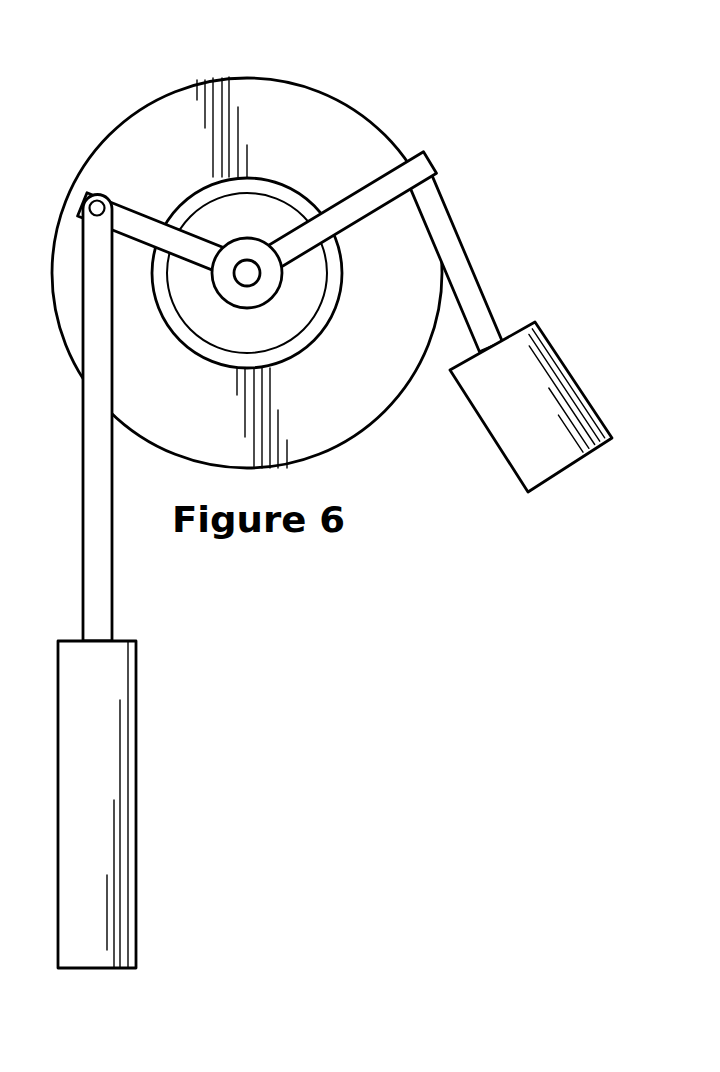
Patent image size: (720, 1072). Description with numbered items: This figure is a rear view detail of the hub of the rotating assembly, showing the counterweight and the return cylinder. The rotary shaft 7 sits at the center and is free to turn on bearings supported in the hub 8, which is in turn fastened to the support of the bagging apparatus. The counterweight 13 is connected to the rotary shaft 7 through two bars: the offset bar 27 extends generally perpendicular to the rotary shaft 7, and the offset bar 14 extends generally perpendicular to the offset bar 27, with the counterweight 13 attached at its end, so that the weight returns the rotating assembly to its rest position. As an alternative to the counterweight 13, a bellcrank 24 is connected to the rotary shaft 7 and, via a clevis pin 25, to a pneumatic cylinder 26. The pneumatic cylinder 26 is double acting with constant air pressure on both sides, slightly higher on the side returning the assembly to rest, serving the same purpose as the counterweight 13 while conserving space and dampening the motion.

The rotary shaft 7 is at (223, 302).
The hub 8 is at (250, 78).
The counterweight 13 is at (583, 362).
The offset bar 14 is at (478, 291).
The bellcrank 24 is at (146, 212).
The clevis pin 25 is at (90, 207).
The pneumatic cylinder 26 is at (137, 805).
The offset bar 27 is at (440, 158).